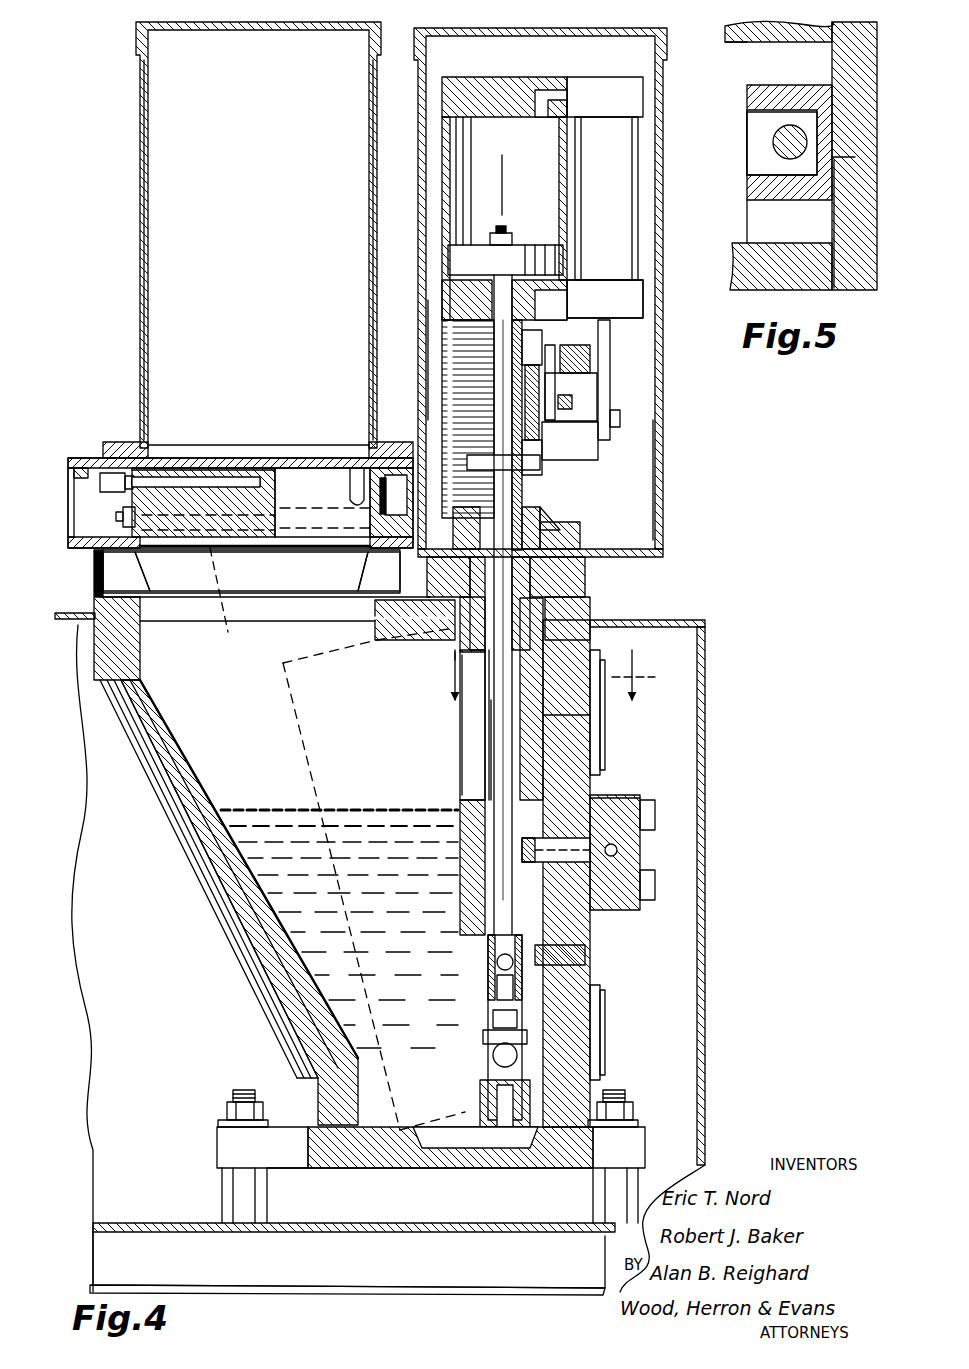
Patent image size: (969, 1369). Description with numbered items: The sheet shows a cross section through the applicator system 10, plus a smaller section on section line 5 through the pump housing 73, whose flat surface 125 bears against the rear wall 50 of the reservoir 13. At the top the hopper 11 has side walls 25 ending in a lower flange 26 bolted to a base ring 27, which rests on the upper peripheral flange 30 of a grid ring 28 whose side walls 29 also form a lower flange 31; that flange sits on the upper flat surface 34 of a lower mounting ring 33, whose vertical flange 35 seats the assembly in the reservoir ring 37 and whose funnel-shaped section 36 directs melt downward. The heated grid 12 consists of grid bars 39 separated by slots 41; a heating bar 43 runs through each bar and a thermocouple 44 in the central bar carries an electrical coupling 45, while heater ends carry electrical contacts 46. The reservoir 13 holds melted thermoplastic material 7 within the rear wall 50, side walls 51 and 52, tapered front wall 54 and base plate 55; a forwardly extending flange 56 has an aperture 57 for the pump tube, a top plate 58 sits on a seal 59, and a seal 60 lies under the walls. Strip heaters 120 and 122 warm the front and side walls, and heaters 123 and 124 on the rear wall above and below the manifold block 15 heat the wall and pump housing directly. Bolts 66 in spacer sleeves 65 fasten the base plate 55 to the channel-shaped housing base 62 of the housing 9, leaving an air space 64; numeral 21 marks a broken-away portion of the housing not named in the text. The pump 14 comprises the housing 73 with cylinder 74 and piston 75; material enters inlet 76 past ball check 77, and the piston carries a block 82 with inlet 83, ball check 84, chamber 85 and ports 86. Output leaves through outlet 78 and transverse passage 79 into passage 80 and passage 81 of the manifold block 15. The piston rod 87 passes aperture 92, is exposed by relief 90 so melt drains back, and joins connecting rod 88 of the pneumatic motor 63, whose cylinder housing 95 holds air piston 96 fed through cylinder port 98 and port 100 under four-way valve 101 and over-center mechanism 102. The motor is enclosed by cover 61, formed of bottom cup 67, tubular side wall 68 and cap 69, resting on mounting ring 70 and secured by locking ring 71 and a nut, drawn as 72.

In FIG. 4, the section line 5 is at (543, 684).
In FIG. 4, the melted thermoplastic material 7 is at (276, 810).
In FIG. 4, the housing 9 is at (708, 705).
In FIG. 4, the applicator system 10 is at (832, 803).
In FIG. 4, the hopper 11 is at (136, 232).
In FIG. 4, the heated grid 12 is at (330, 464).
In FIG. 4, the reservoir 13 is at (215, 850).
In FIG. 5, the reservoir 13 is at (878, 144).
In FIG. 4, the pump 14 is at (466, 763).
In FIG. 5, the pump 14 is at (732, 186).
In FIG. 4, the manifold block 15 is at (636, 903).
In FIG. 4, the hopper 21 is at (148, 1050).
In FIG. 4, the side walls 25 is at (148, 168).
In FIG. 4, the lower flange 26 is at (126, 441).
In FIG. 4, the base ring 27 is at (160, 458).
In FIG. 4, the grid ring 28 is at (80, 512).
In FIG. 4, the side walls 29 is at (375, 508).
In FIG. 4, the upper peripheral flange 30 is at (391, 502).
In FIG. 4, the lower flange 31 is at (350, 545).
In FIG. 4, the lower mounting ring 33 is at (94, 563).
In FIG. 4, the upper flat surface 34 is at (140, 555).
In FIG. 4, the vertical flange 35 is at (104, 586).
In FIG. 4, the funnel-shaped section 36 is at (251, 571).
In FIG. 4, the reservoir ring 37 is at (379, 571).
In FIG. 4, the grid bars 39 is at (250, 468).
In FIG. 4, the slots 41 is at (292, 464).
In FIG. 4, the heating bar 43 is at (229, 599).
In FIG. 4, the thermocouple 44 is at (208, 480).
In FIG. 4, the electrical coupling 45 is at (90, 457).
In FIG. 4, the electrical contact 46 is at (120, 506).
In FIG. 4, the rear wall 50 is at (554, 720).
In FIG. 5, the rear wall 50 is at (851, 180).
In FIG. 4, the side wall 51 is at (341, 676).
In FIG. 5, the side wall 51 is at (738, 40).
In FIG. 5, the side wall 52 is at (740, 274).
In FIG. 4, the tapered front wall 54 is at (205, 807).
In FIG. 4, the base plate 55 is at (214, 1153).
In FIG. 4, the upper forwardly extending flange 56 is at (392, 644).
In FIG. 4, the aperture 57 is at (490, 645).
In FIG. 4, the top plate 58 is at (590, 607).
In FIG. 4, the seal 59 is at (142, 618).
In FIG. 4, the seal 60 is at (333, 1121).
In FIG. 4, the pump housing 61 is at (658, 422).
In FIG. 4, the housing base 62 is at (417, 1232).
In FIG. 4, the pneumatic motor 63 is at (604, 180).
In FIG. 5, the pneumatic motor 63 is at (713, 114).
In FIG. 4, the air space 64 is at (430, 1190).
In FIG. 4, the spacer sleeves 65 is at (224, 1190).
In FIG. 4, the bolts 66 is at (244, 1086).
In FIG. 4, the bottom cup 67 is at (668, 552).
In FIG. 4, the tubular side wall 68 is at (426, 353).
In FIG. 4, the cap 69 is at (588, 40).
In FIG. 4, the mounting ring 70 is at (584, 568).
In FIG. 4, the locking ring 71 is at (578, 527).
In FIG. 4, the block 72 is at (542, 514).
In FIG. 4, the pump housing 73 is at (575, 643).
In FIG. 5, the pump housing 73 is at (770, 95).
In FIG. 4, the cylinder 74 is at (470, 910).
In FIG. 4, the piston 75 is at (496, 983).
In FIG. 4, the inlet 76 is at (480, 1134).
In FIG. 4, the ball check 77 is at (493, 1065).
In FIG. 4, the outlet 78 is at (520, 852).
In FIG. 4, the transverse passage 79 is at (602, 797).
In FIG. 4, the passage 80 is at (616, 798).
In FIG. 4, the passage 81 is at (618, 850).
In FIG. 4, the block 82 is at (492, 1013).
In FIG. 4, the inlet 83 is at (482, 1030).
In FIG. 4, the ball check 84 is at (496, 962).
In FIG. 4, the chamber 85 is at (486, 933).
In FIG. 4, the ports 86 is at (560, 968).
In FIG. 4, the piston rod 87 is at (473, 737).
In FIG. 5, the piston rod 87 is at (770, 139).
In FIG. 4, the connecting rod 88 is at (492, 430).
In FIG. 4, the relief 90 is at (470, 783).
In FIG. 5, the relief 90 is at (760, 160).
In FIG. 4, the aperture 92 is at (503, 790).
In FIG. 4, the cylinder housing 95 is at (512, 60).
In FIG. 4, the air piston 96 is at (505, 196).
In FIG. 4, the cylinder port 98 is at (546, 110).
In FIG. 4, the port 100 is at (555, 300).
In FIG. 4, the four-way valve 101 is at (612, 198).
In FIG. 4, the snap action over-center mechanism 102 is at (620, 448).
In FIG. 4, the strip heater 120 is at (230, 920).
In FIG. 4, the strip heater 122 is at (302, 750).
In FIG. 4, the strip heater 123 is at (608, 658).
In FIG. 4, the strip heater 124 is at (598, 1026).
In FIG. 4, the flat surface 125 is at (578, 706).
In FIG. 5, the flat surface 125 is at (854, 157).